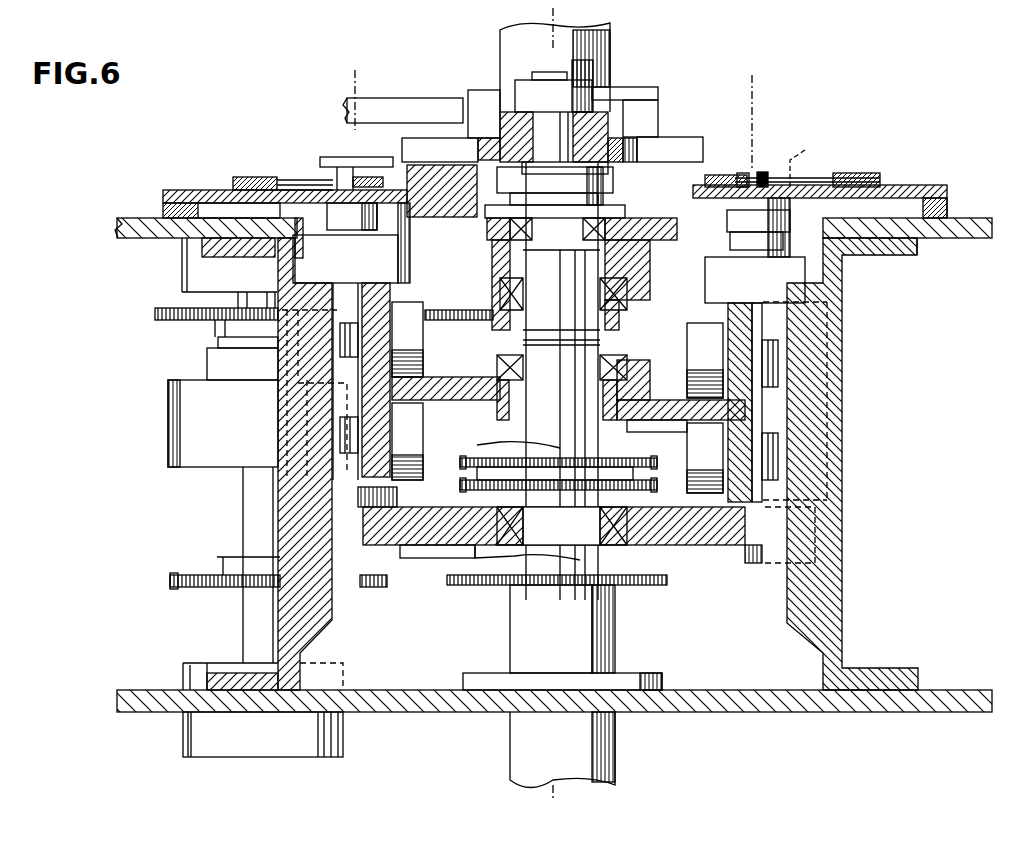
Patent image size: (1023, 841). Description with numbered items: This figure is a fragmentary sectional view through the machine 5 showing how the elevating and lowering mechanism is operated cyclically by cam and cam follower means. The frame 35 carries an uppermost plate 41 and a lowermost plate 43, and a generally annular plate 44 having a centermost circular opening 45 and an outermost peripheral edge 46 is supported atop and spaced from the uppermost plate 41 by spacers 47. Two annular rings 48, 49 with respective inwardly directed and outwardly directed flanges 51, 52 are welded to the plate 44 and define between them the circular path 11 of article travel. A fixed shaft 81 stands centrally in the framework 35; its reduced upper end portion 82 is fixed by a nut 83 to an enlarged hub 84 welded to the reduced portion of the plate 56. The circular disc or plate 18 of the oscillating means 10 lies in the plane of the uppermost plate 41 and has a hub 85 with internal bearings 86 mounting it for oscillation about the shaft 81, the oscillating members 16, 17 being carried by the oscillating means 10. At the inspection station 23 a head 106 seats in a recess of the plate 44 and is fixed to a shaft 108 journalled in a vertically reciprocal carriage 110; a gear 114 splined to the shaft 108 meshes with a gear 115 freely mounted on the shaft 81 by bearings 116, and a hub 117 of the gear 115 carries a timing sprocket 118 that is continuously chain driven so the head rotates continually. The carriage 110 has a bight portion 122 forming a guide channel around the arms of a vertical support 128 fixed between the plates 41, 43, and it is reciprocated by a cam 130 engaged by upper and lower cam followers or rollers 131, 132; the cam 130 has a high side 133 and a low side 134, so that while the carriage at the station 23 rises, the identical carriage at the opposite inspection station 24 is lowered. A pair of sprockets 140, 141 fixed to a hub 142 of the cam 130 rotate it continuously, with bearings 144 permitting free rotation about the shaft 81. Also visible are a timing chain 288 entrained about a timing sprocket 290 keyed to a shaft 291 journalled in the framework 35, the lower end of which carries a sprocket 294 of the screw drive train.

The machine 5 is at (913, 97).
The oscillating means 10 is at (730, 165).
The circular path of article travel 11 is at (298, 185).
The oscillating member 16 is at (648, 195).
The oscillating member 17 is at (450, 175).
The circular disc or plate 18 is at (625, 232).
The inspection station 23 is at (795, 117).
The inspection station 24 is at (333, 105).
The frame 35 is at (128, 250).
The uppermost plate 41 is at (985, 232).
The lowermost plate 43 is at (778, 712).
The annular plate 44 is at (905, 185).
The centermost circular opening 45 is at (612, 210).
The outermost peripheral edge 46 is at (947, 190).
The spacers 47 is at (165, 208).
The annular plate or ring 48 is at (240, 177).
The annular plate or ring 49 is at (375, 175).
The inwardly directed flange 51 is at (262, 190).
The outwardly directed flange 52 is at (762, 172).
The plate 56 is at (668, 137).
The fixed shaft 81 is at (530, 725).
The reduced upper end portion 82 is at (550, 120).
The nut 83 is at (582, 85).
The enlarged hub 84 is at (620, 120).
The hub 85 is at (620, 285).
The bearings 86 is at (605, 255).
The head 106 is at (330, 160).
The shaft 108 is at (312, 158).
The carrier or carriage 110 is at (410, 244).
The gear 114 is at (400, 497).
The gear 115 is at (683, 550).
The bearings 116 is at (462, 545).
The hub 117 is at (485, 578).
The timing sprocket 118 is at (555, 590).
The bight portion 122 is at (400, 275).
The vertical support 128 is at (310, 630).
The cam 130 is at (636, 388).
The upper cam follower or roller 131 is at (408, 333).
The lower cam follower or roller 132 is at (405, 417).
The high side 133 is at (445, 377).
The low side 134 is at (688, 420).
The sprocket 140 is at (565, 458).
The sprocket 141 is at (525, 460).
The hub 142 is at (495, 440).
The bearings 144 is at (615, 356).
The timing chain 288 is at (450, 310).
The timing sprocket 290 is at (180, 322).
The shaft 291 is at (255, 608).
The sprocket 294 is at (205, 590).